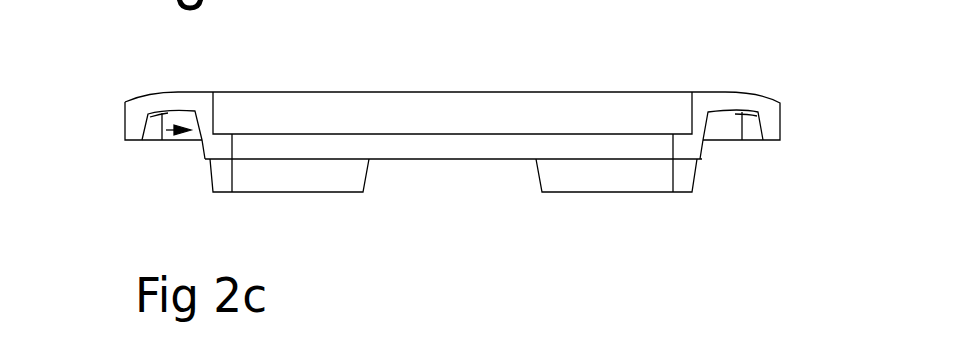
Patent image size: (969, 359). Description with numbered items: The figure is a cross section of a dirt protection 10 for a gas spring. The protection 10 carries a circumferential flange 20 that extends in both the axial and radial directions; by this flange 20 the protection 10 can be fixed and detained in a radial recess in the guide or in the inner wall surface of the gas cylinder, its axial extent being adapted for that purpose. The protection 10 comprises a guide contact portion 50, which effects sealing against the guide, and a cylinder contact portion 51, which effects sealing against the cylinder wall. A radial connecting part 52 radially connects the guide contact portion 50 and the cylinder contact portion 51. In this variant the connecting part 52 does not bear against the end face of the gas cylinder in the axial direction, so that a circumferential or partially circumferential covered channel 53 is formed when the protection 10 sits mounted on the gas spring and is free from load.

The protection 10 is at (686, 53).
The circumferential flange 20 is at (250, 148).
The guide contact portion 50 is at (222, 142).
The cylinder contact portion 51 is at (138, 127).
The radial connecting part 52 is at (177, 100).
The covered channel 53 is at (166, 129).